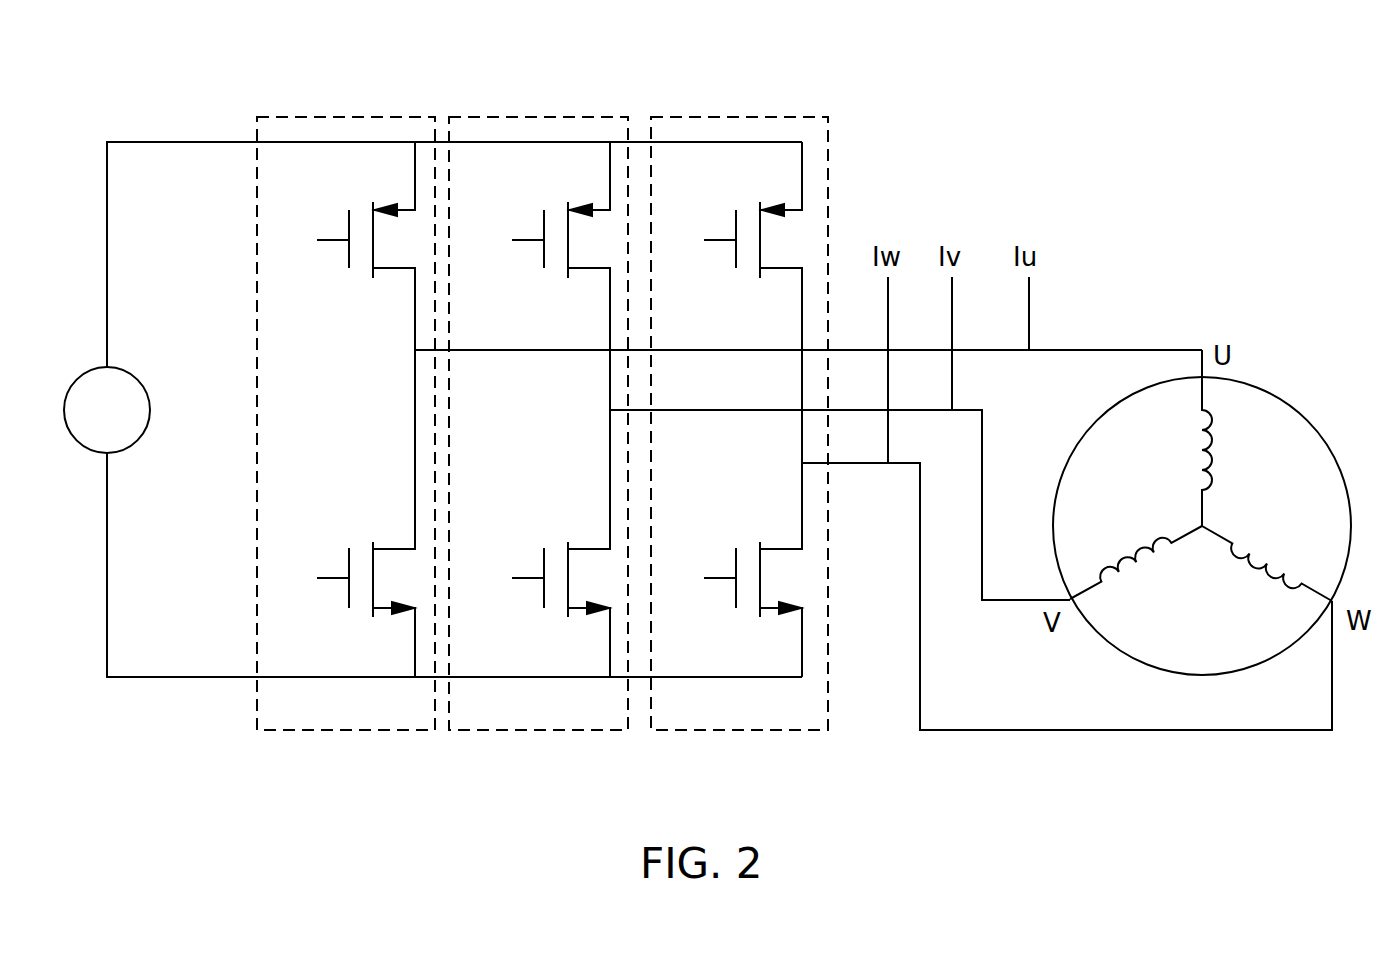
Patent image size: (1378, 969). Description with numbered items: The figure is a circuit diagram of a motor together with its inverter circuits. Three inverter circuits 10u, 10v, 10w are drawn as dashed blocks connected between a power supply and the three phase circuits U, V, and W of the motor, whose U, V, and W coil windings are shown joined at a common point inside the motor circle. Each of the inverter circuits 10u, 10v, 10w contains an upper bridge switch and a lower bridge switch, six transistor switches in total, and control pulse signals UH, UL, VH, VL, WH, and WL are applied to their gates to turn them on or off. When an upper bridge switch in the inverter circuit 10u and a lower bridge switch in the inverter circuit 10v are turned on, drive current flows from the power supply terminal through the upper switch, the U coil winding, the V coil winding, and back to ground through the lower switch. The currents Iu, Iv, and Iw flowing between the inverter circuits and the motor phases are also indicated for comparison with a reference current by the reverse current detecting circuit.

The inverter circuit 10u is at (352, 116).
The inverter circuit 10v is at (547, 116).
The inverter circuit 10w is at (748, 116).